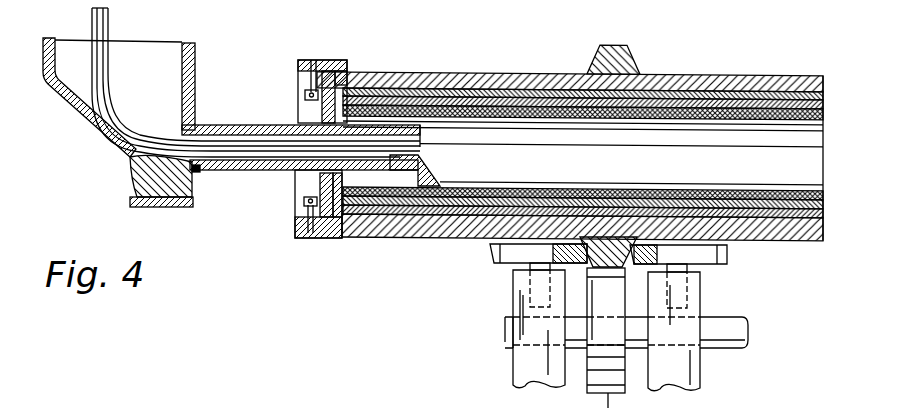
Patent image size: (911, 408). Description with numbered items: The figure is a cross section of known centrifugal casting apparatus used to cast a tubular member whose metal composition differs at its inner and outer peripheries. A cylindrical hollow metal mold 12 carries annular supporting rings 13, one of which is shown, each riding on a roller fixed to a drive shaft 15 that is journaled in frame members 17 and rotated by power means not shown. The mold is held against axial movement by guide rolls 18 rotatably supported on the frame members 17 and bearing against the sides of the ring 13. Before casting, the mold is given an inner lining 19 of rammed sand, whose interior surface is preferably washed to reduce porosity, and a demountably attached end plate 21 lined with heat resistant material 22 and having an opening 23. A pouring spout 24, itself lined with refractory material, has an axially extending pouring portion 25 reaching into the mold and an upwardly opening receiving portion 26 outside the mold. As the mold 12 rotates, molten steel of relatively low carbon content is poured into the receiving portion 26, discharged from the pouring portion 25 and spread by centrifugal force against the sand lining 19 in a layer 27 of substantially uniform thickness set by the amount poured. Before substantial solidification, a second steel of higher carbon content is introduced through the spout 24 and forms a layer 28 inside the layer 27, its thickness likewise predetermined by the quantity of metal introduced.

The cylindrical hollow metal mold 12 is at (510, 82).
The annular supporting ring 13 is at (628, 58).
The drive shaft 15 is at (735, 347).
The frame members 17 is at (515, 364).
The guide rolls 18 is at (492, 250).
The inner lining 19 is at (438, 83).
The end plate 21 is at (312, 116).
The heat resistant material 22 is at (347, 87).
The opening 23 is at (303, 177).
The pouring spout 24 is at (240, 168).
The pouring portion 25 is at (218, 125).
The receiving portion 26 is at (196, 58).
The layer 27 is at (727, 107).
The layer 28 is at (560, 185).